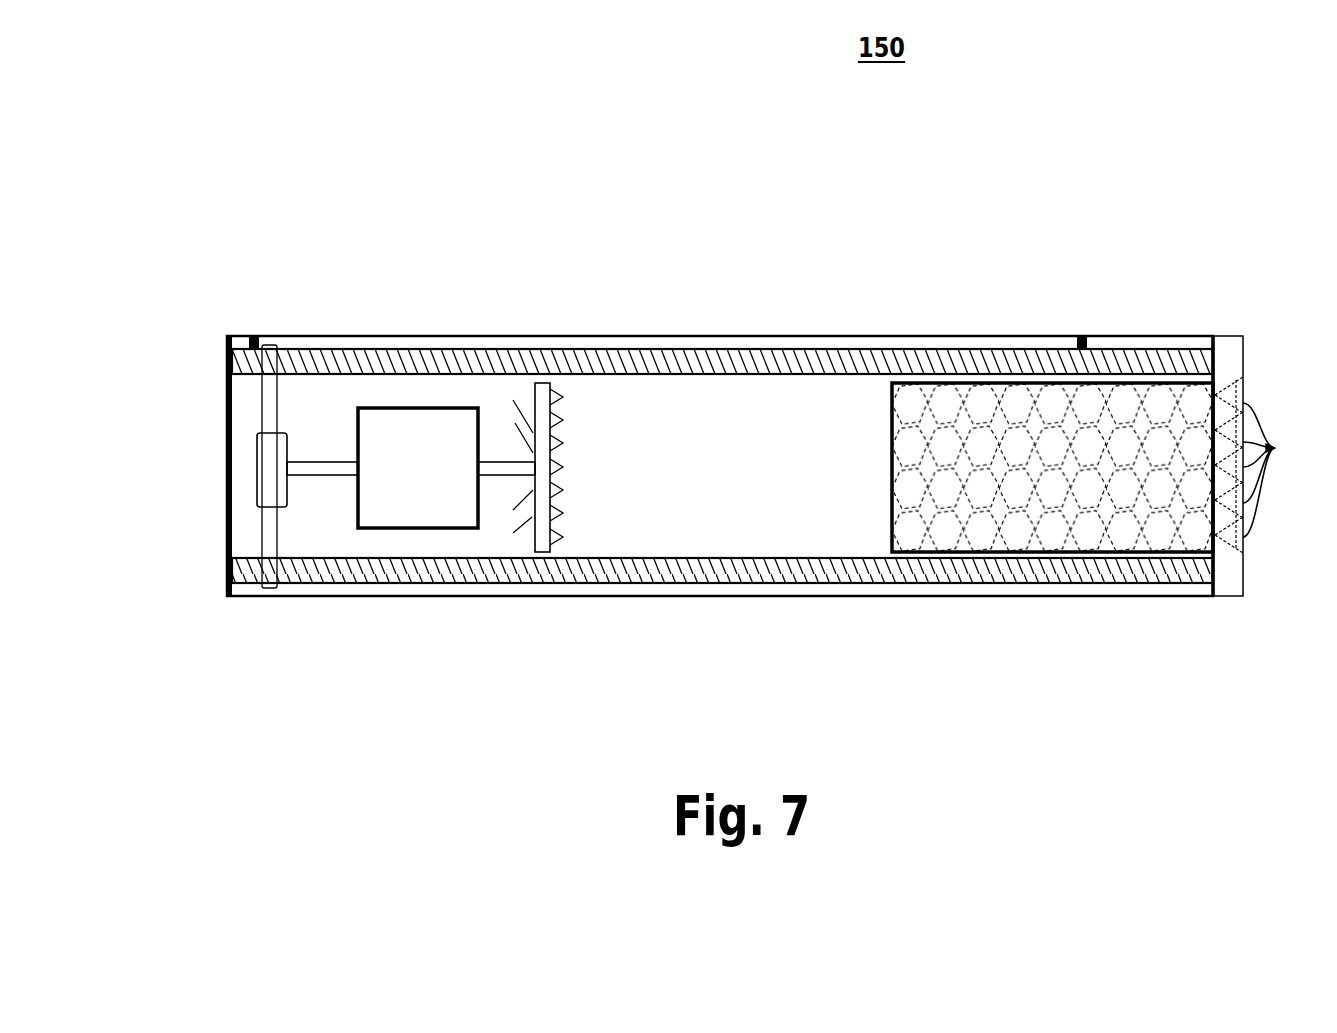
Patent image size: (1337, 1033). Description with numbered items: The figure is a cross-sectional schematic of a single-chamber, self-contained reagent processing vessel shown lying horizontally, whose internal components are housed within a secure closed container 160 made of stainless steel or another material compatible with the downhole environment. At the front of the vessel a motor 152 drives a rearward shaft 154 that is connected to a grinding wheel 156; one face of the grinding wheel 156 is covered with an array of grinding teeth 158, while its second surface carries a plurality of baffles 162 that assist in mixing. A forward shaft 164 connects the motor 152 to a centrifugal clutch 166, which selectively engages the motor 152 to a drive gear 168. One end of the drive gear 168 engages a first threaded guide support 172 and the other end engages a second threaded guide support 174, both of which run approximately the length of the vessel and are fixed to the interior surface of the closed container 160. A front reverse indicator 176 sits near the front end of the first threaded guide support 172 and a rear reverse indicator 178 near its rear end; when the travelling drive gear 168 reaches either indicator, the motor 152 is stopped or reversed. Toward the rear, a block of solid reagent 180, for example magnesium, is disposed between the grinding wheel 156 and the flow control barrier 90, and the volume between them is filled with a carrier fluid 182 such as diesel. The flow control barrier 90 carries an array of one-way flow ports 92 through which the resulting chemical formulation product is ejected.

The flow control barrier 90 is at (1228, 597).
The one-way flow ports 92 is at (1269, 465).
The motor 152 is at (423, 408).
The rearward shaft 154 is at (507, 476).
The grinding wheel 156 is at (543, 383).
The grinding teeth 158 is at (558, 395).
The closed container 160 is at (720, 336).
The baffles 162 is at (523, 527).
The forward shaft 164 is at (320, 476).
The centrifugal clutch 166 is at (257, 470).
The drive gear 168 is at (262, 523).
The first threaded guide support 172 is at (940, 349).
The second threaded guide support 174 is at (725, 596).
The front reverse indicator 176 is at (253, 337).
The rear reverse indicator 178 is at (1084, 337).
The block of solid reagent 180 is at (892, 470).
The carrier fluid 182 is at (757, 473).